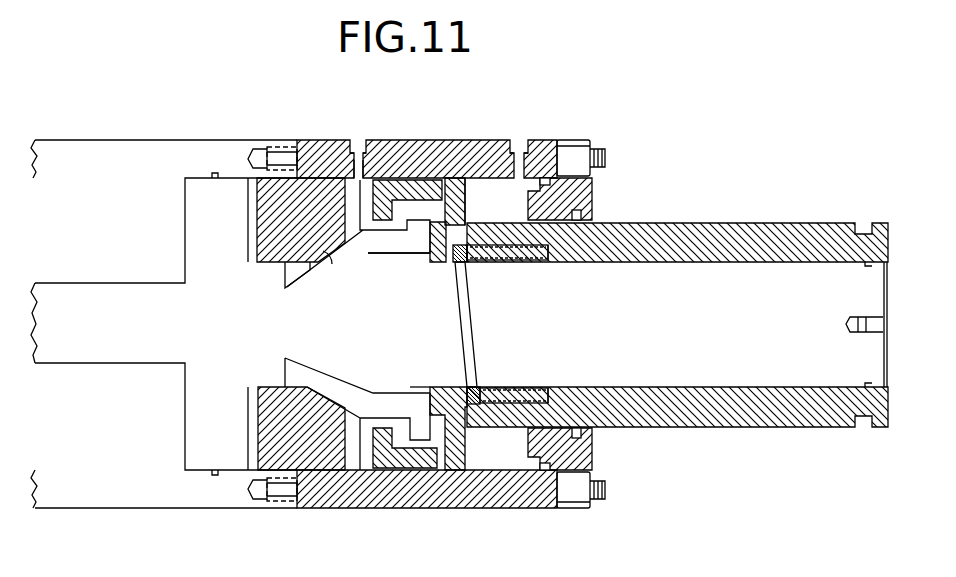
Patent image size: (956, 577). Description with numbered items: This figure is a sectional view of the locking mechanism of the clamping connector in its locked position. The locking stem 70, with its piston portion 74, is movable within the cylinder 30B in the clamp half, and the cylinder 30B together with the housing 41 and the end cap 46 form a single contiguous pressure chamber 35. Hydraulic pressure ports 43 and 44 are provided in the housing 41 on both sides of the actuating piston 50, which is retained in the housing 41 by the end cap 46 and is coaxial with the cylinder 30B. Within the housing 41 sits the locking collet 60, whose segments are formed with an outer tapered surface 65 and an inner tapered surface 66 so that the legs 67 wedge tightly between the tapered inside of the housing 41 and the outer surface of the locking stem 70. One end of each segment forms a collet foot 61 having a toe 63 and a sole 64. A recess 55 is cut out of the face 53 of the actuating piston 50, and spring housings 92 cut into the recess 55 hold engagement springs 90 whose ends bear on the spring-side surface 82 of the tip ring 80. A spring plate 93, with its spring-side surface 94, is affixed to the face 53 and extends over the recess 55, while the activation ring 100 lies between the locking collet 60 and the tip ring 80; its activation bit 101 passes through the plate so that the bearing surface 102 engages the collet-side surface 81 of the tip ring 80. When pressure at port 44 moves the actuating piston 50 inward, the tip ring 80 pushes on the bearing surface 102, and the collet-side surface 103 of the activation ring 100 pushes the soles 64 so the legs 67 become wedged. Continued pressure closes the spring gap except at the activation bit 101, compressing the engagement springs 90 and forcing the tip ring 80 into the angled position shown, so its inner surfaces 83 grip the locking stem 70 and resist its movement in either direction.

The cylinder 30B is at (66, 418).
The pressure chamber 35 is at (307, 140).
The housing 41 is at (351, 140).
The hydraulic pressure port 43 is at (362, 138).
The hydraulic pressure port 44 is at (524, 142).
The end cap 46 is at (578, 205).
The actuating piston 50 is at (795, 228).
The face of the actuating piston 53 is at (447, 250).
The recess 55 is at (472, 247).
The locking collet 60 is at (368, 250).
The collet foot 61 is at (418, 218).
The toe 63 is at (445, 470).
The sole 64 is at (428, 393).
The outer tapered surface 65 is at (323, 257).
The inner tapered surface 66 is at (330, 280).
The legs 67 is at (320, 380).
The locking stem 70 is at (730, 285).
The piston portion 74 is at (207, 268).
The tip ring 80 is at (470, 300).
The collet-side surface 81 is at (463, 330).
The spring-side surface 82 is at (477, 362).
The inner surfaces 83 is at (466, 264).
The engagement springs 90 is at (522, 254).
The spring housings 92 is at (550, 388).
The spring plate 93 is at (450, 262).
The spring-side surface 94 is at (470, 222).
The activation ring 100 is at (430, 248).
The activation bit 101 is at (427, 387).
The bearing surface 102 is at (452, 387).
The collet-side surface 103 is at (467, 428).